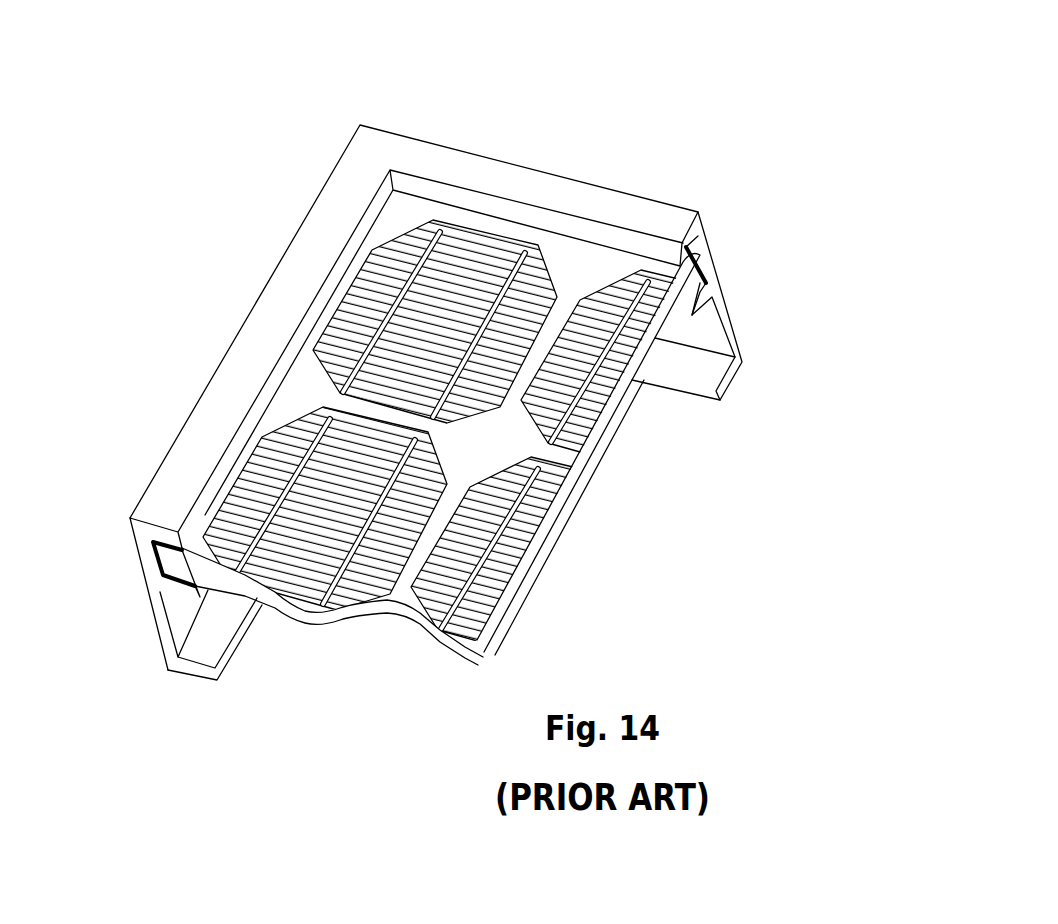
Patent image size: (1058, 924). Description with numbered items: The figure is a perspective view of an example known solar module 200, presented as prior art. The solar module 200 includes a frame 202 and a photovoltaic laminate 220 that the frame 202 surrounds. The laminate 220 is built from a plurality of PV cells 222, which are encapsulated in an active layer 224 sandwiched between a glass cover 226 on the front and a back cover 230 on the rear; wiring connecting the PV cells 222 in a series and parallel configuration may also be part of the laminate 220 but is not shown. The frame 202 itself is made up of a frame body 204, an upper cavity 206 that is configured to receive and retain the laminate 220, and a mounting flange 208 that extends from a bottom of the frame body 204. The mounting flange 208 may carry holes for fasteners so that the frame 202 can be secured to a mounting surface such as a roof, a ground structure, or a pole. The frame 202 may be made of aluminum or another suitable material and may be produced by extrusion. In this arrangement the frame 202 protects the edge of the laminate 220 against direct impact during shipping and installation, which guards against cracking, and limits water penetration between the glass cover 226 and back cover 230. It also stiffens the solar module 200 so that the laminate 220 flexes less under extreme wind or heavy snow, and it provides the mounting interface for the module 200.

The solar module 200 is at (670, 148).
The frame 202 is at (413, 153).
The frame body 204 is at (165, 628).
The upper cavity 206 is at (150, 562).
The mounting flange 208 is at (210, 655).
The photovoltaic laminate 220 is at (505, 453).
The PV cells 222 is at (626, 380).
The active layer 224 is at (606, 452).
The glass cover 226 is at (372, 603).
The back cover 230 is at (548, 543).